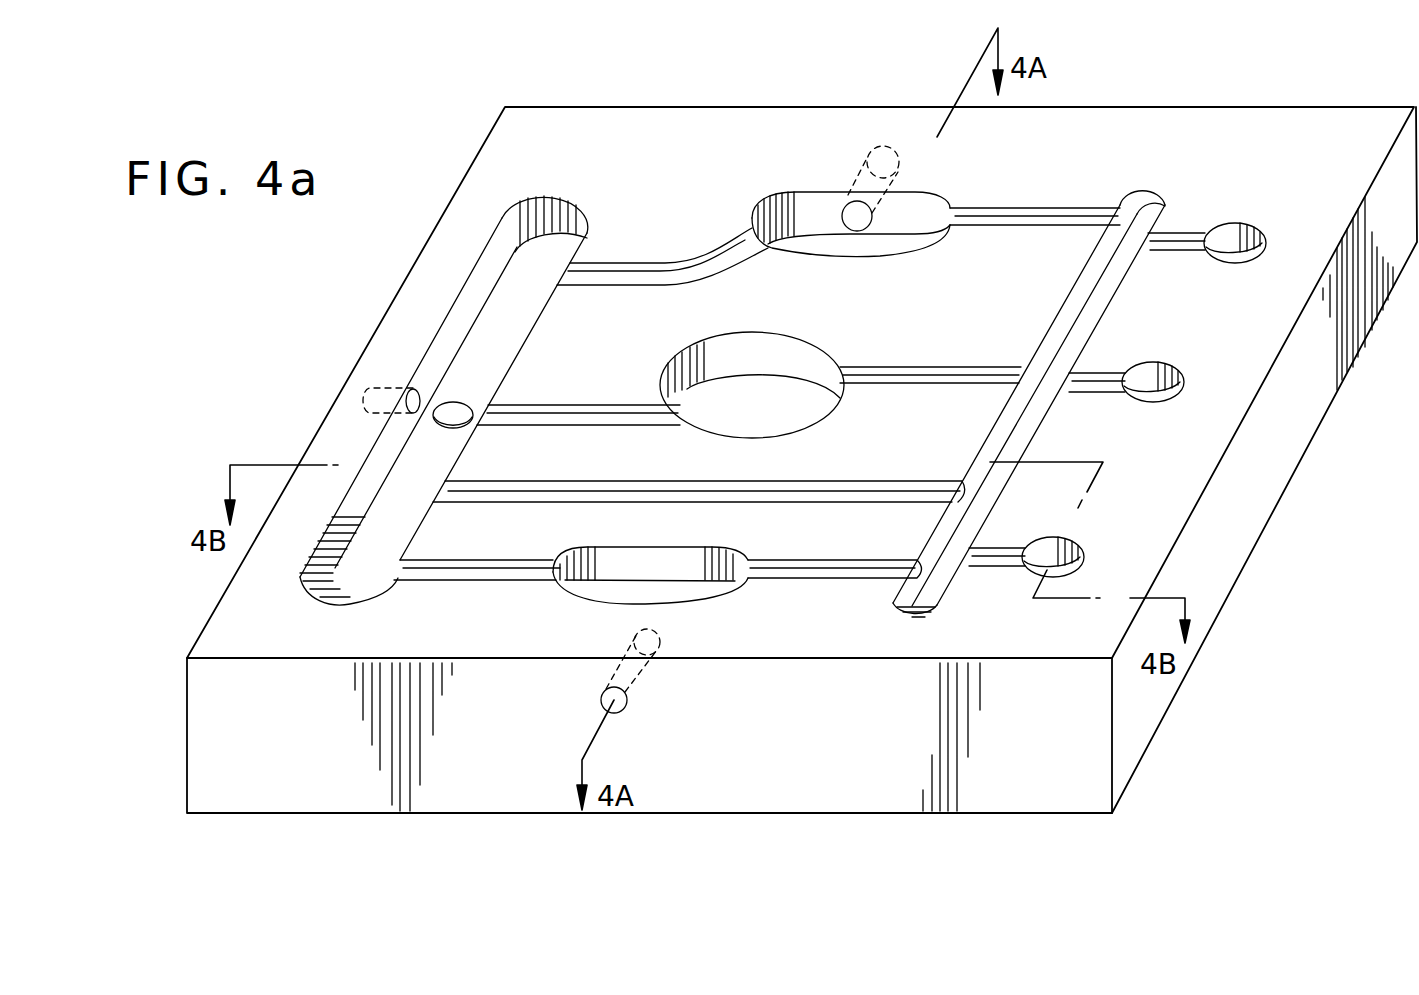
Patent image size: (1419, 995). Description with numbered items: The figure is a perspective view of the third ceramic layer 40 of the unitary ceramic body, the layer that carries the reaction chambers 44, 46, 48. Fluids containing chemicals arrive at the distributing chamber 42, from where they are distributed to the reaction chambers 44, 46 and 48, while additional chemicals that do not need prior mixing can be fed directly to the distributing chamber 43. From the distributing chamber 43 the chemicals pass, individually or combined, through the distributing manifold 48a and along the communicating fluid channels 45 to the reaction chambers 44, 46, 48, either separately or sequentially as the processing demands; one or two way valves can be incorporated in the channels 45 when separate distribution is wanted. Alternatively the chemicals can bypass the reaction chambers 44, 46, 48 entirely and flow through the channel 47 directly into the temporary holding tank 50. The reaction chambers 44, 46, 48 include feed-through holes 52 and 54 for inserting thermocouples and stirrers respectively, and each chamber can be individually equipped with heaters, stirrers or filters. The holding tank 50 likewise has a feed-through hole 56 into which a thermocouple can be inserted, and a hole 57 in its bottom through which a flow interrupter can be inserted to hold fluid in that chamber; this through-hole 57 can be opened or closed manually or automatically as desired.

The third ceramic layer 40 is at (1267, 725).
The distributing chamber 42 is at (1177, 363).
The distributing chamber 43 is at (1250, 225).
The reaction chamber 44 is at (700, 593).
The communicating fluid channels 45 is at (1023, 222).
The reaction chamber 46 is at (823, 363).
The channel 47 is at (848, 495).
The reaction chamber 48 is at (937, 207).
The distributing manifold 48a is at (1148, 190).
The temporary holding tank 50 is at (513, 330).
The feed-through hole 52 is at (622, 707).
The feed-through hole 54 is at (903, 153).
The feed-through hole 56 is at (413, 378).
The hole 57 is at (455, 403).